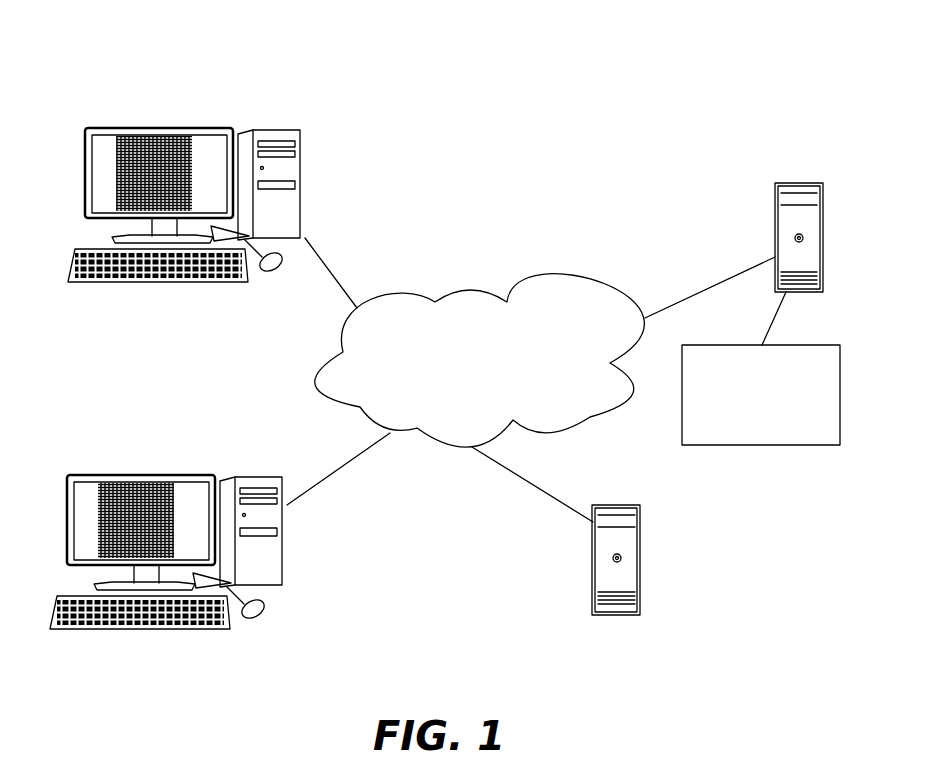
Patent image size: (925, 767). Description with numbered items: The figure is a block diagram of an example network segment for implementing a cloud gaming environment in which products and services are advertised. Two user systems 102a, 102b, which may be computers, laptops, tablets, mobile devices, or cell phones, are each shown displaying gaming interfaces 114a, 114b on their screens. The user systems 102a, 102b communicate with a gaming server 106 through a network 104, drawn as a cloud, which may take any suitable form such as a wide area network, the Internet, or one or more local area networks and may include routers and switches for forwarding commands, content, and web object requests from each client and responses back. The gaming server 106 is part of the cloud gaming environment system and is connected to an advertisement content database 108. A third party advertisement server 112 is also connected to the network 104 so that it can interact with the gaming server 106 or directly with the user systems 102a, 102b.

The user system 102a is at (85, 128).
The user system 102b is at (72, 475).
The gaming interface 114a is at (207, 167).
The gaming interface 114b is at (197, 513).
The network 104 is at (480, 391).
The gaming server 106 is at (775, 222).
The advertisement content database 108 is at (747, 437).
The third party advertisement server 112 is at (593, 556).